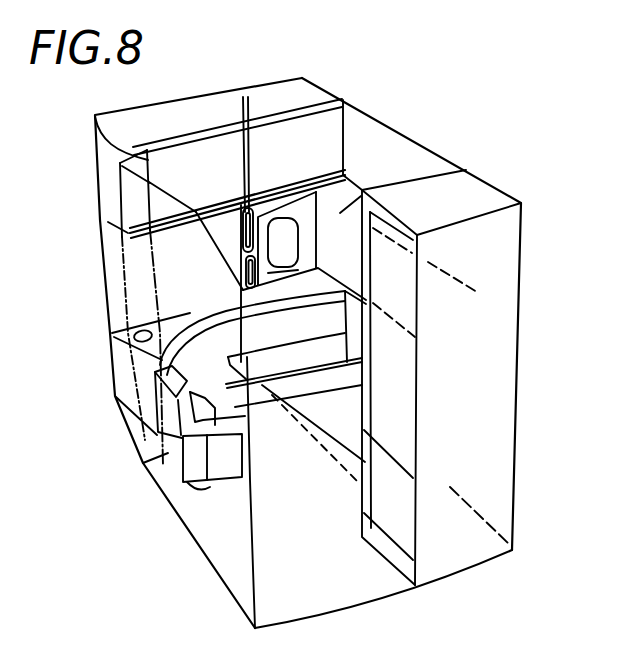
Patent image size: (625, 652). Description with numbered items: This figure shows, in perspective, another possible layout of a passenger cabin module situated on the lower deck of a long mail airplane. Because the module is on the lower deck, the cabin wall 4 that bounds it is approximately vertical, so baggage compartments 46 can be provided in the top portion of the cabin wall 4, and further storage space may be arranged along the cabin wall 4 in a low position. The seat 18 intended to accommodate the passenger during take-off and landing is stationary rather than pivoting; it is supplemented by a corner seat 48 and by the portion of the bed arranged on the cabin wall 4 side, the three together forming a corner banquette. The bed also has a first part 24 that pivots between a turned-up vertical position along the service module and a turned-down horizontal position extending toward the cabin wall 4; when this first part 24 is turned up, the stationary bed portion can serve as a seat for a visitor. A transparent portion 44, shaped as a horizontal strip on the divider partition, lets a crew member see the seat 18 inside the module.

The cabin wall 4 is at (118, 268).
The seat 18 is at (172, 455).
The first part of the bed 24 is at (453, 177).
The transparent portion 44 is at (337, 233).
The baggage compartments 46 is at (278, 140).
The corner seat 48 is at (197, 350).